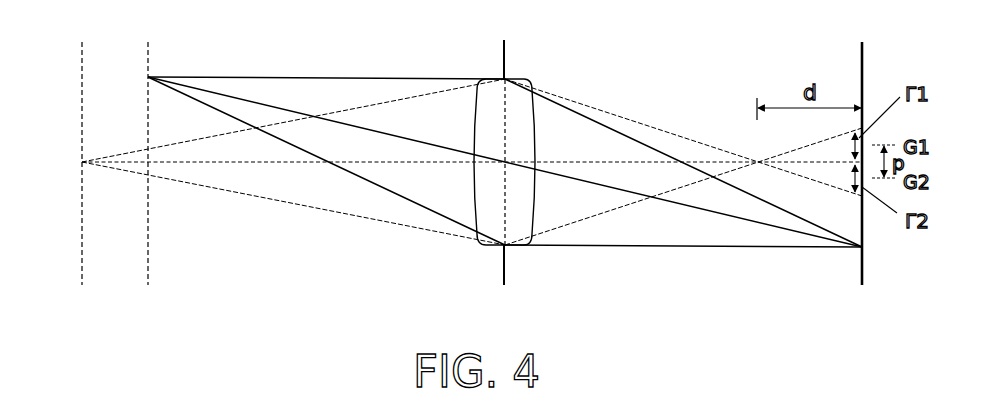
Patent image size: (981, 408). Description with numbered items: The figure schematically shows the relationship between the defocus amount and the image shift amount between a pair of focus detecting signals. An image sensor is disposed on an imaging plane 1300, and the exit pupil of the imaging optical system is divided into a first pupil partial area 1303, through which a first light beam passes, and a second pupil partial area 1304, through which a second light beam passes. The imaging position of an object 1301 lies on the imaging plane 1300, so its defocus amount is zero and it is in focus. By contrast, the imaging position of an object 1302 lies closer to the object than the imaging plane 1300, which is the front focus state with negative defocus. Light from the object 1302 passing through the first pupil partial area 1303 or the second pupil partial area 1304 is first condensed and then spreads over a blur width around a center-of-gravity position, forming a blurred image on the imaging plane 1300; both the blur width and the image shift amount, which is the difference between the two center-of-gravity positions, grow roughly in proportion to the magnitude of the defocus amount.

The imaging plane 1300 is at (866, 149).
The object 1301 is at (474, 163).
The object 1302 is at (439, 163).
The first pupil partial area 1303 is at (507, 110).
The second pupil partial area 1304 is at (505, 207).